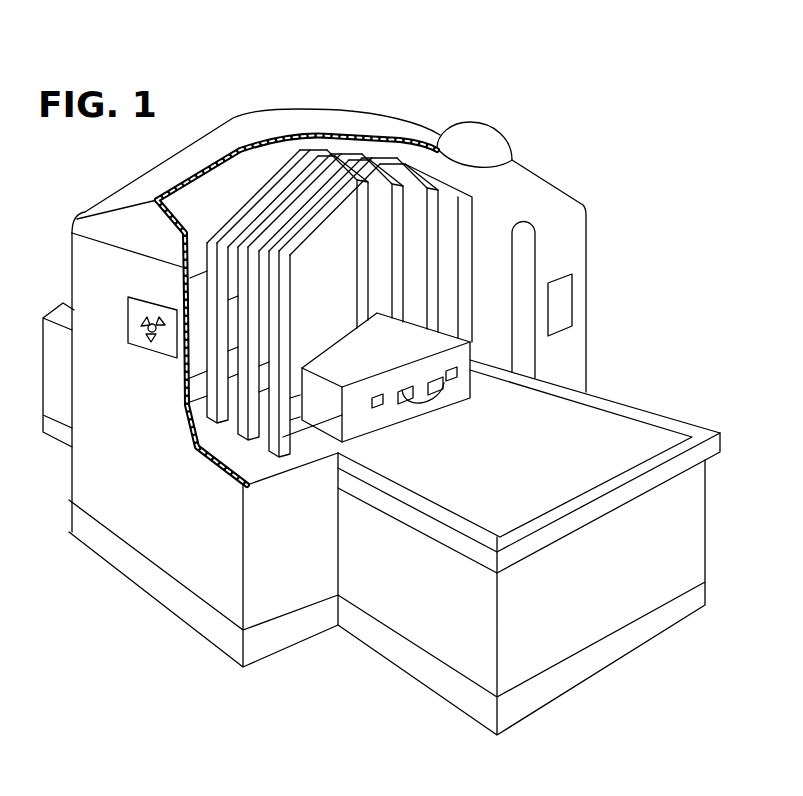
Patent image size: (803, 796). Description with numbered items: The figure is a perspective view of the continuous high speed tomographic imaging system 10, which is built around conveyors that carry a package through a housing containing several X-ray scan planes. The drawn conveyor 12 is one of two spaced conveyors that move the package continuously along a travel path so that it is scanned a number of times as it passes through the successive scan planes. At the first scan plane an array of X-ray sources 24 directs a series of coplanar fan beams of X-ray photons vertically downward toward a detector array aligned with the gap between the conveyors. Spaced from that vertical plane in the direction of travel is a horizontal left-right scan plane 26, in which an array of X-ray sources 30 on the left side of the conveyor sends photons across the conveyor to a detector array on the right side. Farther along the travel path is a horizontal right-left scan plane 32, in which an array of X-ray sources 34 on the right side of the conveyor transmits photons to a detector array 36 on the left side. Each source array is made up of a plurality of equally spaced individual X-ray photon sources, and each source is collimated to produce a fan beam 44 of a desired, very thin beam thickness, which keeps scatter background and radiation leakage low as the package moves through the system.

The continuous high speed tomographic imaging system 10 is at (640, 316).
The conveyor 12 is at (642, 438).
The array of X-ray sources 24 is at (443, 190).
The horizontal left-right scan plane 26 is at (333, 160).
The array of X-ray sources 30 is at (322, 162).
The horizontal right-left scan plane 32 is at (294, 156).
The array of X-ray sources 34 is at (302, 368).
The detector array 36 is at (228, 340).
The fan beam 44 is at (405, 240).